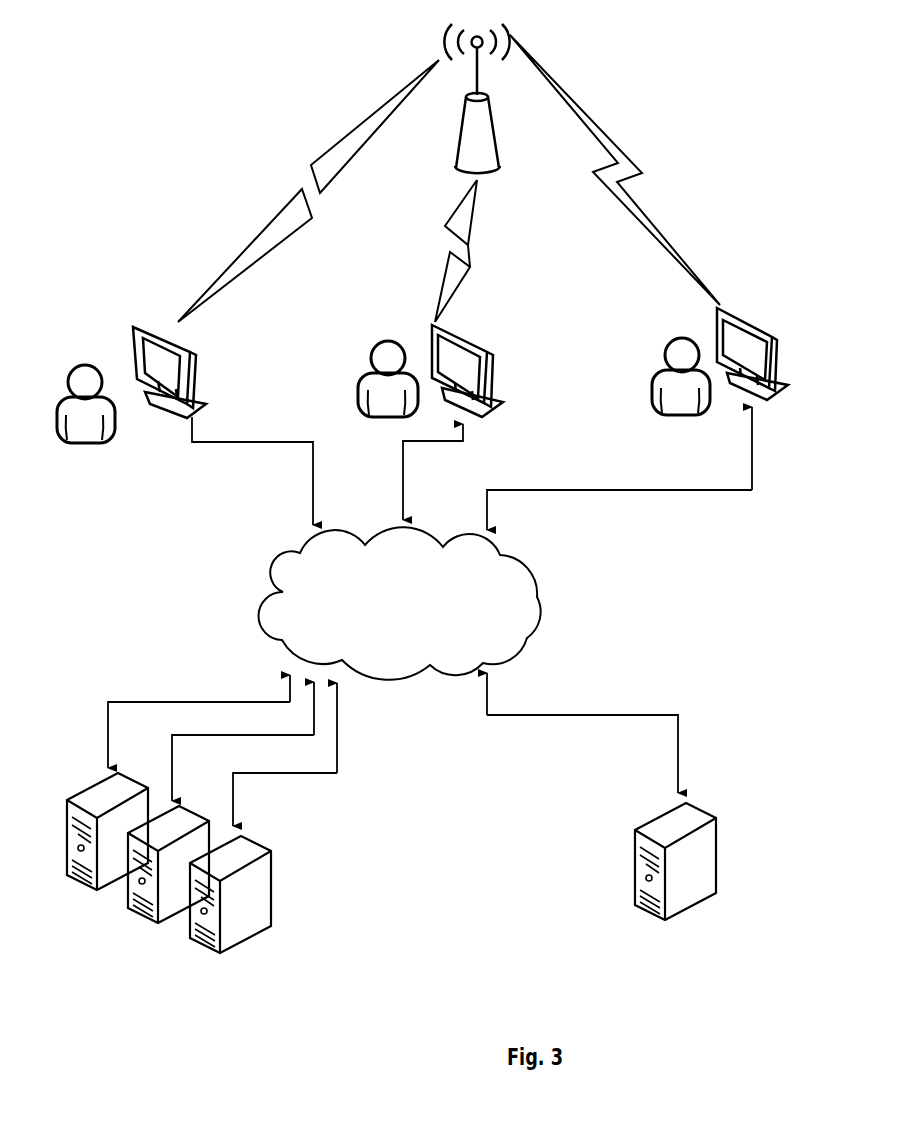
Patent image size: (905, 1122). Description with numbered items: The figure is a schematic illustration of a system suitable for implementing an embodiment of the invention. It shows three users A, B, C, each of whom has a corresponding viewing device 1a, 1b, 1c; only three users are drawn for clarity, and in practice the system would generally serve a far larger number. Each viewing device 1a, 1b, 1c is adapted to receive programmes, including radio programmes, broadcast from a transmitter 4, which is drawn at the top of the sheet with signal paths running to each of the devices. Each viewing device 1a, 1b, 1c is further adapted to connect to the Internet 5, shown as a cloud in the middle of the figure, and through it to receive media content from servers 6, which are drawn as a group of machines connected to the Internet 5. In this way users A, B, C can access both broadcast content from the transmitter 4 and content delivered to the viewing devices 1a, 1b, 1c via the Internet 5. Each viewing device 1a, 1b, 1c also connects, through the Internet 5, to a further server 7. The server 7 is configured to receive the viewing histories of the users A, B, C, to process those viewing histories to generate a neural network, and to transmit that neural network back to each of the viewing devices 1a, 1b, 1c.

The viewing device 1a is at (143, 324).
The viewing device 1b is at (493, 354).
The viewing device 1c is at (748, 316).
The transmitter 4 is at (492, 118).
The Internet 5 is at (538, 623).
The servers 6 is at (70, 880).
The server 7 is at (720, 853).
The user A is at (76, 368).
The user B is at (361, 376).
The user C is at (657, 372).